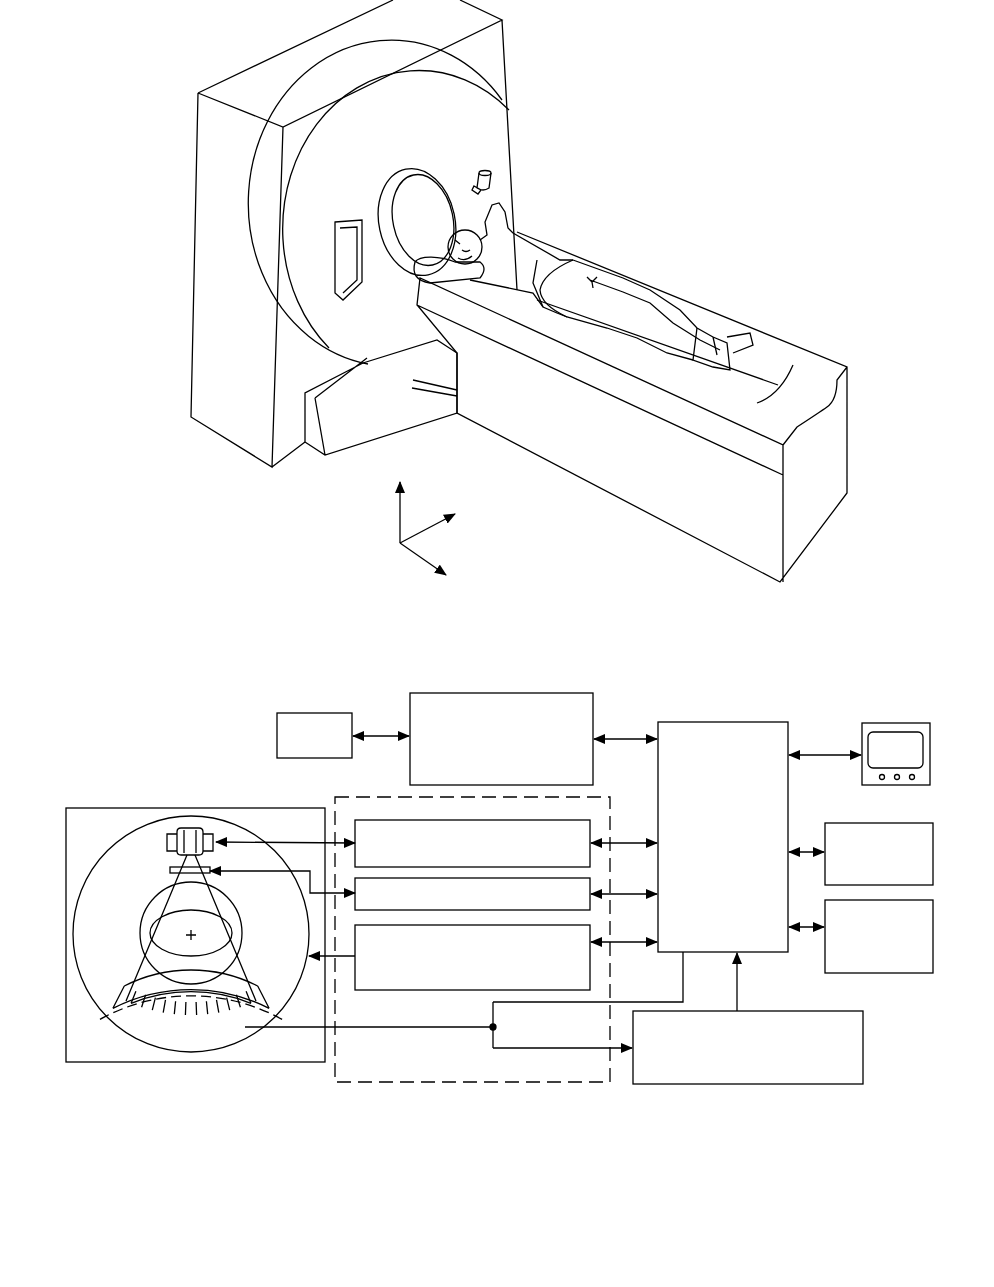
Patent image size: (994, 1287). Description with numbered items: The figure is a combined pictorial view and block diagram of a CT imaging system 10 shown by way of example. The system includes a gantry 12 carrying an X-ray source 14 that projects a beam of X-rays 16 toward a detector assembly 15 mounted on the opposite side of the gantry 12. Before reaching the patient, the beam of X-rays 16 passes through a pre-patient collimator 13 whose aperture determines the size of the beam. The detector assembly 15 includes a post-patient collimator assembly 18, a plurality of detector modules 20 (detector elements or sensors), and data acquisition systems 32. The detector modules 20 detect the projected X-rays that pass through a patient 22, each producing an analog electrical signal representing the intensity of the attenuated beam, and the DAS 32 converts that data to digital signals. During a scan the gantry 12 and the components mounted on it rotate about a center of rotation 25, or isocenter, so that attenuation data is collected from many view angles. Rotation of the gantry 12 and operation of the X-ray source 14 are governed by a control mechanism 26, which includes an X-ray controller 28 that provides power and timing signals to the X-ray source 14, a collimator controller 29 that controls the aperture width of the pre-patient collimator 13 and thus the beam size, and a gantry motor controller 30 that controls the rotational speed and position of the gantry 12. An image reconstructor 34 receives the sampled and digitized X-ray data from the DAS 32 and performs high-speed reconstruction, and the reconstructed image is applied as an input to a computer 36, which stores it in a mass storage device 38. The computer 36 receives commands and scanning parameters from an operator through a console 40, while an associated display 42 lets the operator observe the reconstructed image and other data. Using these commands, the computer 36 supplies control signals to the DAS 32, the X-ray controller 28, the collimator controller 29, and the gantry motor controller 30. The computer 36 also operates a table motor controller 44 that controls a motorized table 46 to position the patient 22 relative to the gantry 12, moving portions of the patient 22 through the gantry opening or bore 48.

The CT imaging system 10 is at (584, 62).
The gantry 12 is at (465, 134).
The pre-patient collimator 13 is at (170, 871).
The X-ray source 14 is at (498, 183).
The detector assembly 15 is at (112, 990).
The beam of X-rays 16 is at (140, 975).
The collimator assembly 18 is at (248, 992).
The detector modules 20 is at (225, 1018).
The patient 22 is at (535, 258).
The center of rotation 25 is at (213, 922).
The control mechanism 26 is at (346, 1097).
The X-ray controller 28 is at (590, 822).
The collimator controller 29 is at (590, 880).
The gantry motor controller 30 is at (590, 957).
The data acquisition systems 32 is at (158, 1022).
The image reconstructor 34 is at (770, 1085).
The computer 36 is at (723, 722).
The mass storage device 38 is at (926, 973).
The console 40 is at (853, 823).
The display 42 is at (895, 723).
The table motor controller 44 is at (500, 693).
The motorized table 46 is at (602, 478).
The gantry opening 48 is at (405, 208).